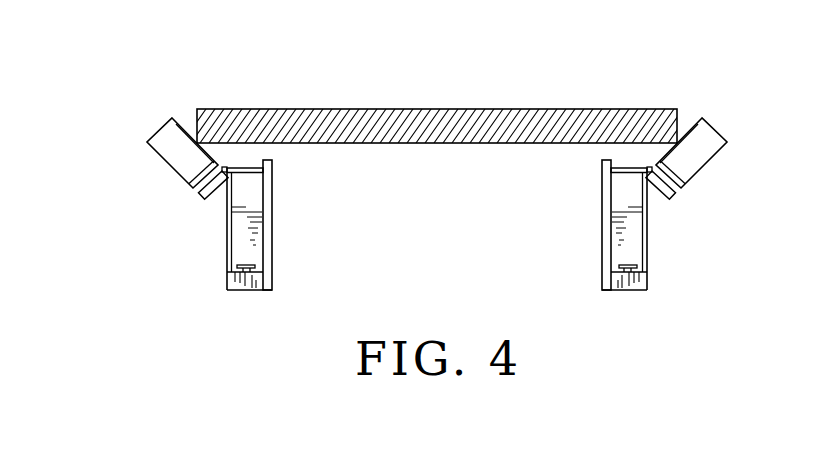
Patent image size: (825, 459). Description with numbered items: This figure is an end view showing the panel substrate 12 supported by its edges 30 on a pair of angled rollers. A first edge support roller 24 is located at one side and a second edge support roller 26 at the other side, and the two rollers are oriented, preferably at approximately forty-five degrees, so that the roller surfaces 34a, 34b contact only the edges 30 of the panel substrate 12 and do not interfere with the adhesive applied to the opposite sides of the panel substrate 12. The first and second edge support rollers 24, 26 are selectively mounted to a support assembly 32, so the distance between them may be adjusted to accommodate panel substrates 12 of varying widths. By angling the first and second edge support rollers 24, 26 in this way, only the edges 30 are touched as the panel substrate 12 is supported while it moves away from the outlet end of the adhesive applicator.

The panel substrate 12 is at (422, 108).
The first edge support roller 24 is at (224, 230).
The second edge support roller 26 is at (651, 219).
The edges 30 is at (198, 137).
The support assembly 32 is at (228, 275).
The roller surface 34a is at (218, 168).
The roller surface 34b is at (656, 168).